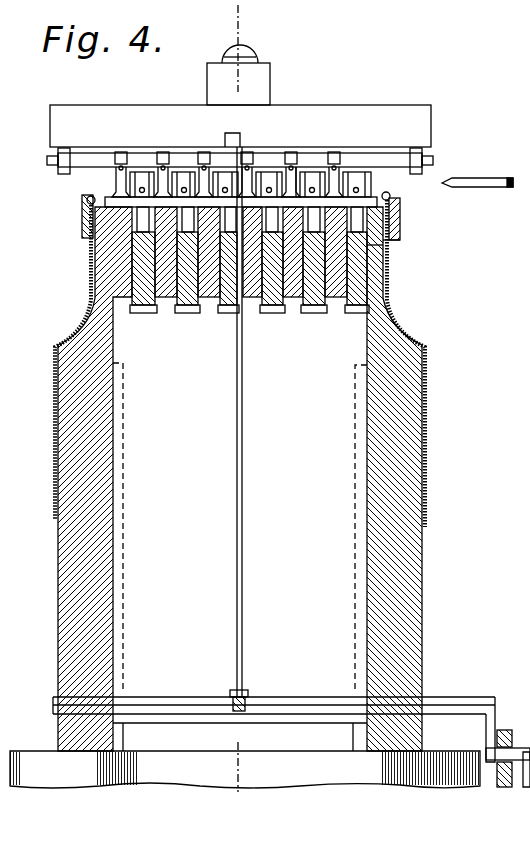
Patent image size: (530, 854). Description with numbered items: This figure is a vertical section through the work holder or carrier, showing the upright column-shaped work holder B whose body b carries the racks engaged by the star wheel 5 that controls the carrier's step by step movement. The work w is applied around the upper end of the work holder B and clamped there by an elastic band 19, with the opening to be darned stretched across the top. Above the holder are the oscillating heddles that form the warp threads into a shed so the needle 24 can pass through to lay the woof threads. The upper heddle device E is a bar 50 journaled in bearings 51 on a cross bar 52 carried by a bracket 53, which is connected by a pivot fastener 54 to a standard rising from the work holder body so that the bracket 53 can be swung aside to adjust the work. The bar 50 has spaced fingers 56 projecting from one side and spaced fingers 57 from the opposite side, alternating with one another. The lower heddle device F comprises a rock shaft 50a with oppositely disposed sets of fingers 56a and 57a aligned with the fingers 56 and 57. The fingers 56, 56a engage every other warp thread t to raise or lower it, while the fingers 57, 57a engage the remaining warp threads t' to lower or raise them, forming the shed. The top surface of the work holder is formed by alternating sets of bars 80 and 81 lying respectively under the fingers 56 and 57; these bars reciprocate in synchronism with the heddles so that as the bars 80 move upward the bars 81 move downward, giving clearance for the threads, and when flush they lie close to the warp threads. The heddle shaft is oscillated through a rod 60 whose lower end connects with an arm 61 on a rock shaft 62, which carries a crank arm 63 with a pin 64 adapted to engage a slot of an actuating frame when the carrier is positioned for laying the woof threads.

The star wheel 5 is at (260, 28).
The pivot fastener 54 is at (256, 56).
The bracket 53 is at (270, 78).
The cross bar 52 is at (431, 106).
The bar 50 is at (378, 160).
The bearings 51 is at (64, 174).
The warp thread t is at (227, 151).
The fingers 56 is at (152, 180).
The fingers 56a is at (165, 176).
The fingers 57 is at (250, 197).
The fingers 57a is at (292, 196).
The upper heddle device E is at (311, 162).
The warp thread t' is at (299, 163).
The work holder B is at (424, 601).
The work w is at (400, 324).
The rock shaft 50a is at (400, 201).
The elastic band 19 is at (400, 232).
The lower heddle device F is at (373, 247).
The bars 80 is at (292, 298).
The bars 81 is at (308, 316).
The rod 60 is at (243, 430).
The arm 61 is at (250, 697).
The rock shaft 62 is at (302, 698).
The crank arm 63 is at (496, 722).
The pin 64 is at (513, 750).
The body b is at (430, 752).
The needle 24 is at (492, 180).